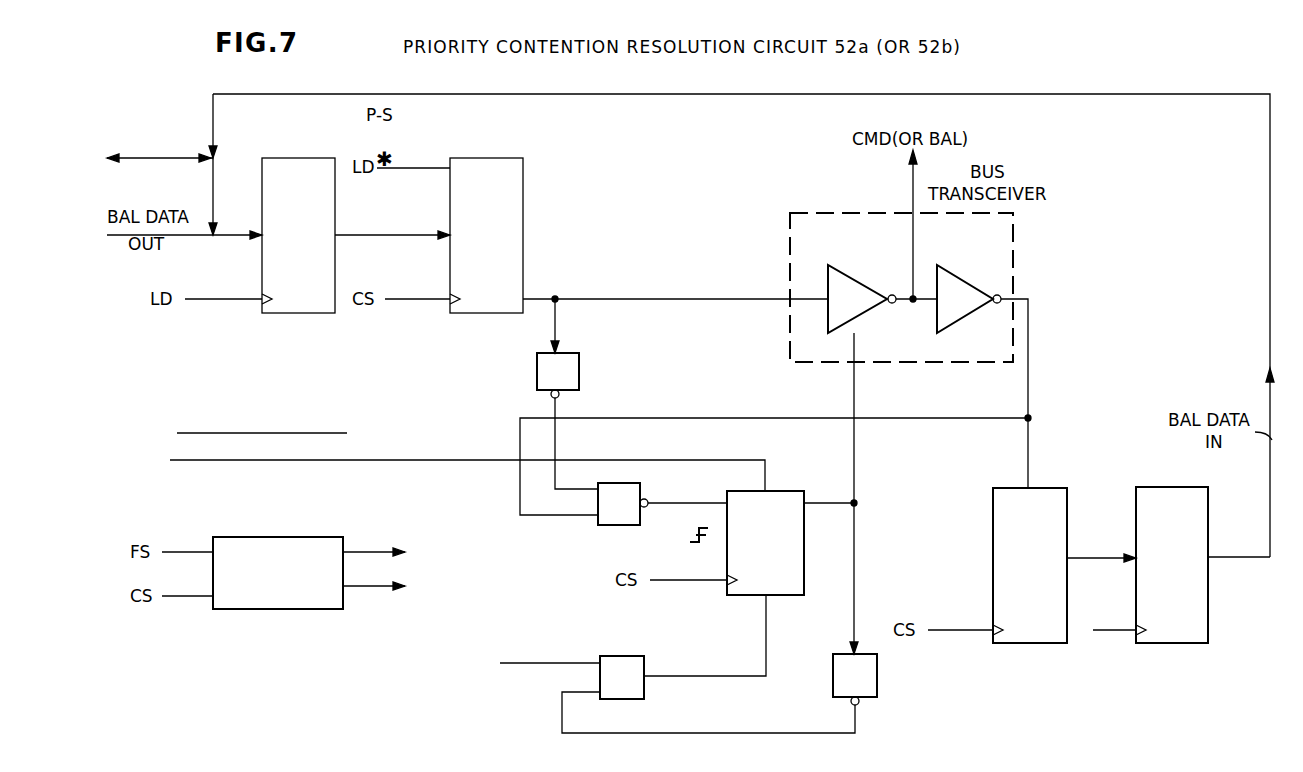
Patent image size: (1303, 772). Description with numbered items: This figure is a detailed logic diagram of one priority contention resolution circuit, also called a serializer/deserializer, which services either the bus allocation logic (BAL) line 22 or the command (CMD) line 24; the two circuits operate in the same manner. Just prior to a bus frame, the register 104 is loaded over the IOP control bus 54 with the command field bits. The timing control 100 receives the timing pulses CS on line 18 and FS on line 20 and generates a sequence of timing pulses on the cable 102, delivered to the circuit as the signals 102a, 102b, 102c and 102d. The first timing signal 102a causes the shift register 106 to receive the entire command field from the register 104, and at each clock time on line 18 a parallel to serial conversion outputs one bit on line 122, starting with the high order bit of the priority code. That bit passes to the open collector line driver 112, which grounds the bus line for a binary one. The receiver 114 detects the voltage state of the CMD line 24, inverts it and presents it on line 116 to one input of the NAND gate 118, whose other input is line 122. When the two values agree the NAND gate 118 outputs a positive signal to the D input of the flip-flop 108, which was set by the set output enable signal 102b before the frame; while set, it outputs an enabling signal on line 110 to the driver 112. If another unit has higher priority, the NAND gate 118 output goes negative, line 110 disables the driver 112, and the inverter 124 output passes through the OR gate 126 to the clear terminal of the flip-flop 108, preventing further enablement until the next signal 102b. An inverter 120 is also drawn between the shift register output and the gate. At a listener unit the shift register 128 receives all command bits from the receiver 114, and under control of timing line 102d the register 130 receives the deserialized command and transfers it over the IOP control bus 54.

The IOP control bus 54 is at (305, 95).
The register 104 is at (290, 315).
The shift register 106 is at (490, 315).
The first timing signal 102a is at (418, 169).
The CS line 18 is at (406, 300).
The shift register output line 122 is at (670, 300).
The line driver 112 is at (852, 272).
The receiver 114 is at (955, 278).
The command (CMD) line 24 is at (912, 186).
The bus allocation logic (BAL) line 22 is at (874, 169).
The enabling line 110 is at (854, 468).
The receiver output line 116 is at (738, 418).
The inverter 120 is at (579, 365).
The set output enable signal 102b is at (460, 461).
The NAND gate 118 is at (612, 515).
The flip-flop 108 is at (792, 493).
The OR gate 126 is at (630, 660).
The timing signal 102c is at (567, 665).
The inverter 124 is at (877, 680).
The timing control 100 is at (318, 600).
The FS line 20 is at (180, 553).
The timing cable 102 is at (370, 553).
The shift register 128 is at (1035, 636).
The timing line 102d is at (1105, 630).
The register 130 is at (1200, 636).